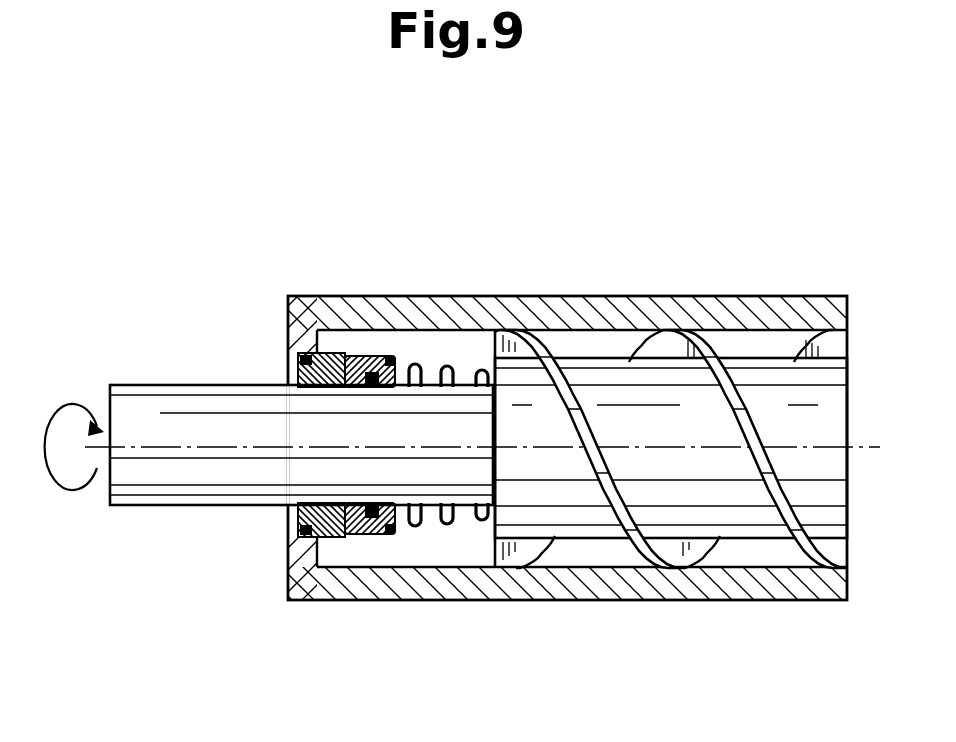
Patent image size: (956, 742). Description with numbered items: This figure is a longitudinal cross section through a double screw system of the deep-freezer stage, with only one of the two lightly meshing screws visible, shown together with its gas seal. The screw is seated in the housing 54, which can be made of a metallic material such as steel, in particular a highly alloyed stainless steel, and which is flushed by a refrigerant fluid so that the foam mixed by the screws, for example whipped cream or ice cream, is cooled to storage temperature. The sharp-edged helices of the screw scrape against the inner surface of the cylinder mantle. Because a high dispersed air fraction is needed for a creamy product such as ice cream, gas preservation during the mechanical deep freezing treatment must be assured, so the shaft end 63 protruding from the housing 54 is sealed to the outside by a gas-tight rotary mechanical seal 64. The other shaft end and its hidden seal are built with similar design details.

The housing 54 is at (705, 590).
The shaft end 63 is at (185, 475).
The gas-tight rotary mechanical seal 64 is at (375, 525).